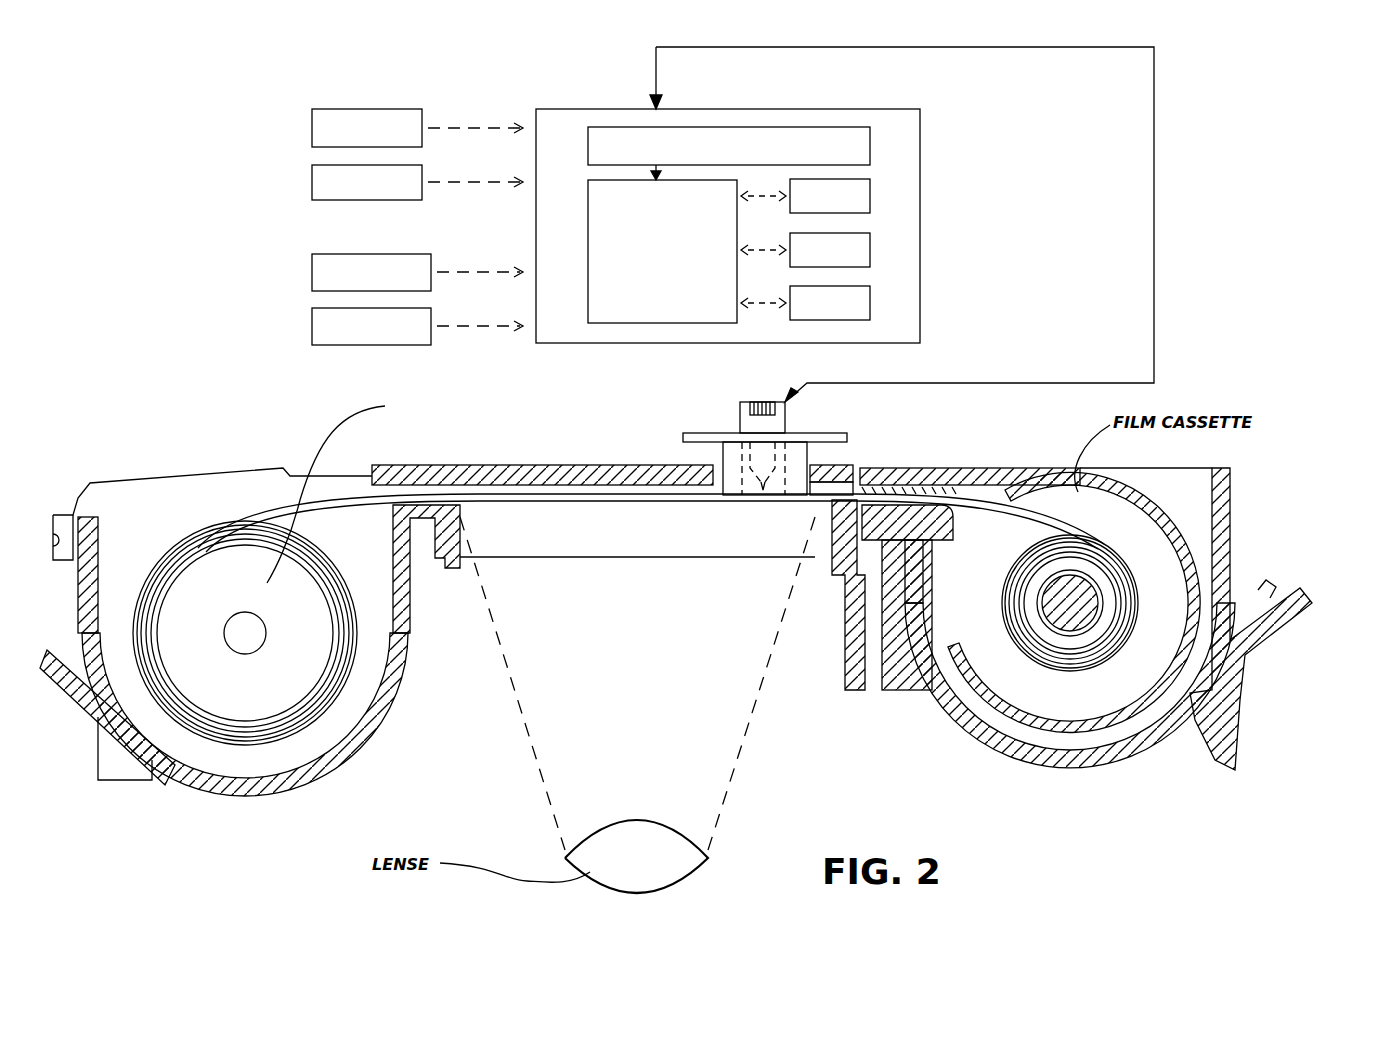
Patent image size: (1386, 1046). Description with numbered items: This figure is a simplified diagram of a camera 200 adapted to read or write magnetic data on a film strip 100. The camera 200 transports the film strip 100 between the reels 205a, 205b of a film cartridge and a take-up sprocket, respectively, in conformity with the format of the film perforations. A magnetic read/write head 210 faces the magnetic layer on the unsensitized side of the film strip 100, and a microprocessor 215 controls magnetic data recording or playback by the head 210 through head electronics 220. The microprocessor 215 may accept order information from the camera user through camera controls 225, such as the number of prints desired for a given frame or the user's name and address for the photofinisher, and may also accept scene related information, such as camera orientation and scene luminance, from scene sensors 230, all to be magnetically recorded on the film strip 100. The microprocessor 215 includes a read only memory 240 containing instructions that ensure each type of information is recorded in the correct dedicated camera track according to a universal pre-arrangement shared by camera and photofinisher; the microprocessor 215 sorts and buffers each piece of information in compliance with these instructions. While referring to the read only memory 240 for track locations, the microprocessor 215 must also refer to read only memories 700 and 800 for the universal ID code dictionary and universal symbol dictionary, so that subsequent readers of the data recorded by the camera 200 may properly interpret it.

The film strip 100 is at (583, 490).
The camera 200 is at (1232, 520).
The reel of film cartridge 205a is at (1010, 640).
The take-up sprocket reel 205b is at (325, 693).
The magnetic read/write head 210 is at (787, 411).
The microprocessor 215 is at (630, 316).
The head electronics 220 is at (870, 145).
The camera controls 225 is at (312, 271).
The scene sensors 230 is at (312, 128).
The read only memory 240 is at (870, 195).
The read only memory 700 is at (870, 250).
The read only memory 800 is at (870, 303).